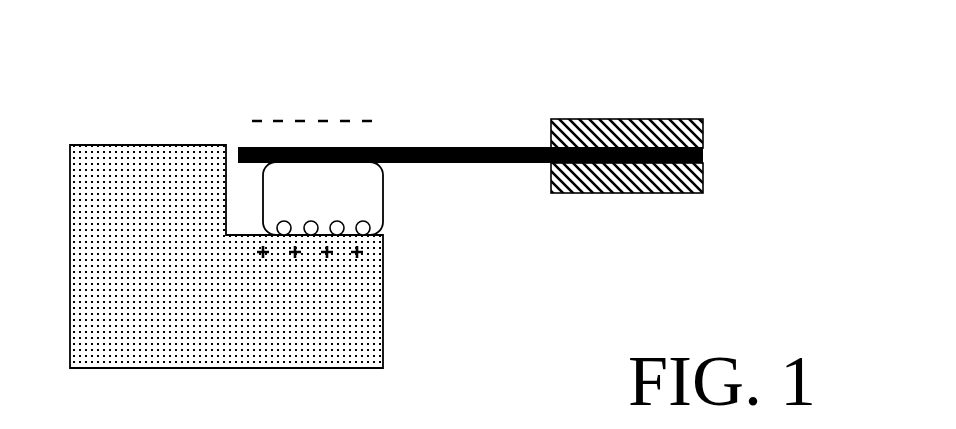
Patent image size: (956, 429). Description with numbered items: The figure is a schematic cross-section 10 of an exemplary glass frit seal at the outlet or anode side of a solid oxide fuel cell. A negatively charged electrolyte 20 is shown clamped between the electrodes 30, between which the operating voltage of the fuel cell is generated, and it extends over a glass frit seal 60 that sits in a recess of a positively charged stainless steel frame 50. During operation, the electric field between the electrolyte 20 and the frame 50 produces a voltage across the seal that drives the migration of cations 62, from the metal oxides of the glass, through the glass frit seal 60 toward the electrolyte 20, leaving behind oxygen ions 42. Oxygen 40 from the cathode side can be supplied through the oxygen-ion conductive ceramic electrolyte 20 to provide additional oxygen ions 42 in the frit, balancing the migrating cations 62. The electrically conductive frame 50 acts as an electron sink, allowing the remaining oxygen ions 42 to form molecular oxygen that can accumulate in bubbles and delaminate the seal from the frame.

The cross-section 10 is at (634, 62).
The electrolyte 20 is at (714, 157).
The electrodes 30 is at (714, 178).
The oxygen 40 is at (332, 135).
The oxygen ions 42 is at (332, 162).
The stainless steel frame 50 is at (226, 256).
The glass frit seal 60 is at (394, 198).
The cations 62 is at (312, 174).